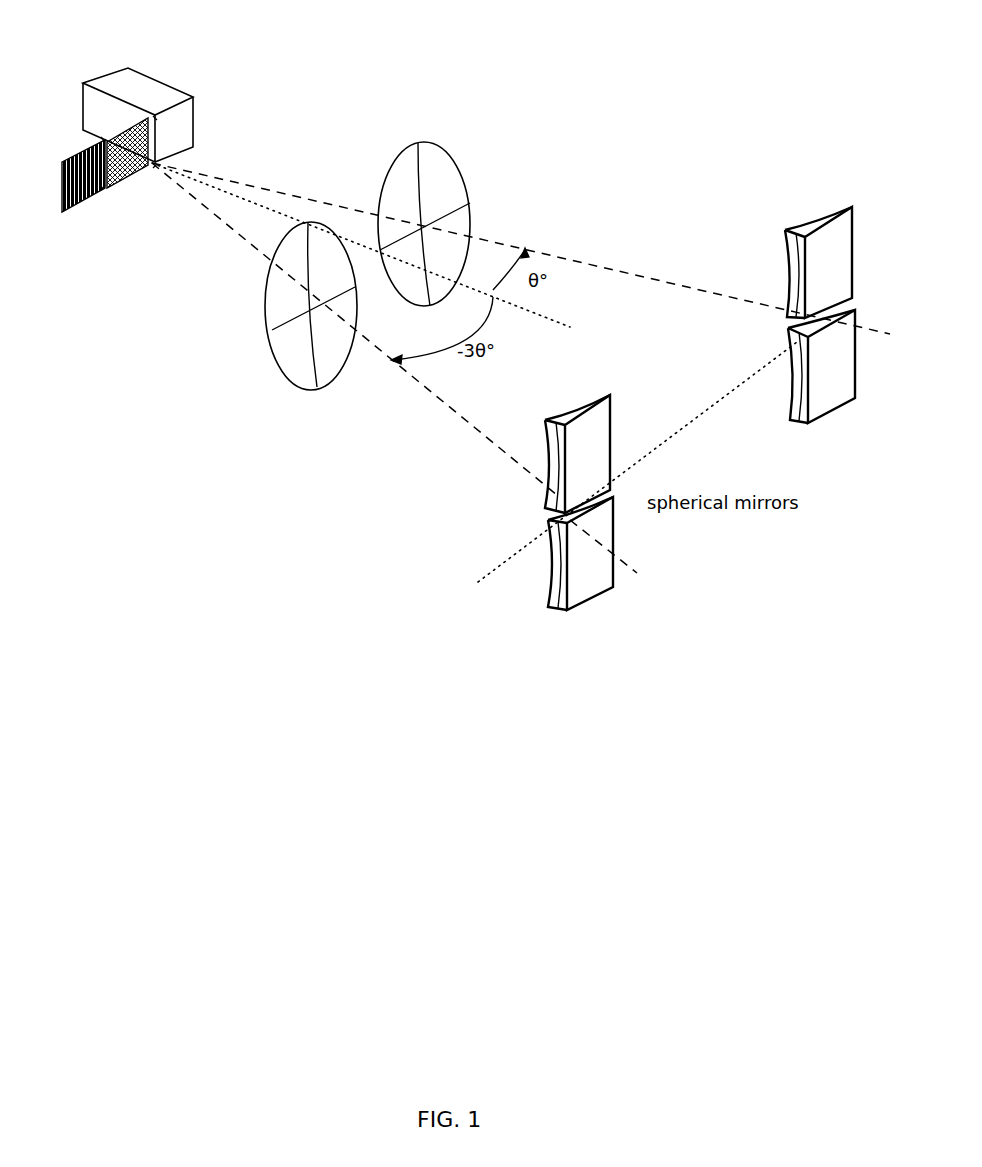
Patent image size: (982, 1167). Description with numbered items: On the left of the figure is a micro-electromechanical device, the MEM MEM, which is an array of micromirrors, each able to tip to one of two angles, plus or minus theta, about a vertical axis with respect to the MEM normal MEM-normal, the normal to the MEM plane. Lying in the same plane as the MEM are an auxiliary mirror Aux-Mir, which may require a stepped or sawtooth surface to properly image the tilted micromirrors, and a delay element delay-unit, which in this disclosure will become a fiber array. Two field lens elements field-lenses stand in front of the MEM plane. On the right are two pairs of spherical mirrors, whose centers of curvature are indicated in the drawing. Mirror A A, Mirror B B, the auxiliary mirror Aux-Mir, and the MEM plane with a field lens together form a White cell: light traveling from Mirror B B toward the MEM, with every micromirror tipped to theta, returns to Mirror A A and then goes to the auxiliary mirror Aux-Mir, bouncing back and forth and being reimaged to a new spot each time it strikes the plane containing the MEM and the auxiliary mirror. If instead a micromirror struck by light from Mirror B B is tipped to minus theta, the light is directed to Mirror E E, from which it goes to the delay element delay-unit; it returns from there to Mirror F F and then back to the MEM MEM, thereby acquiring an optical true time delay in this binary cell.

The micro-electromechanical device MEM is at (133, 166).
The auxiliary mirror Aux-Mir is at (57, 176).
The delay unit delay-unit is at (186, 115).
The field lenses field-lenses is at (367, 243).
The normal to the MEM plane MEM-normal is at (394, 262).
The Mirror A is at (577, 454).
The Mirror B is at (580, 553).
The Mirror E is at (818, 262).
The Mirror F is at (821, 366).